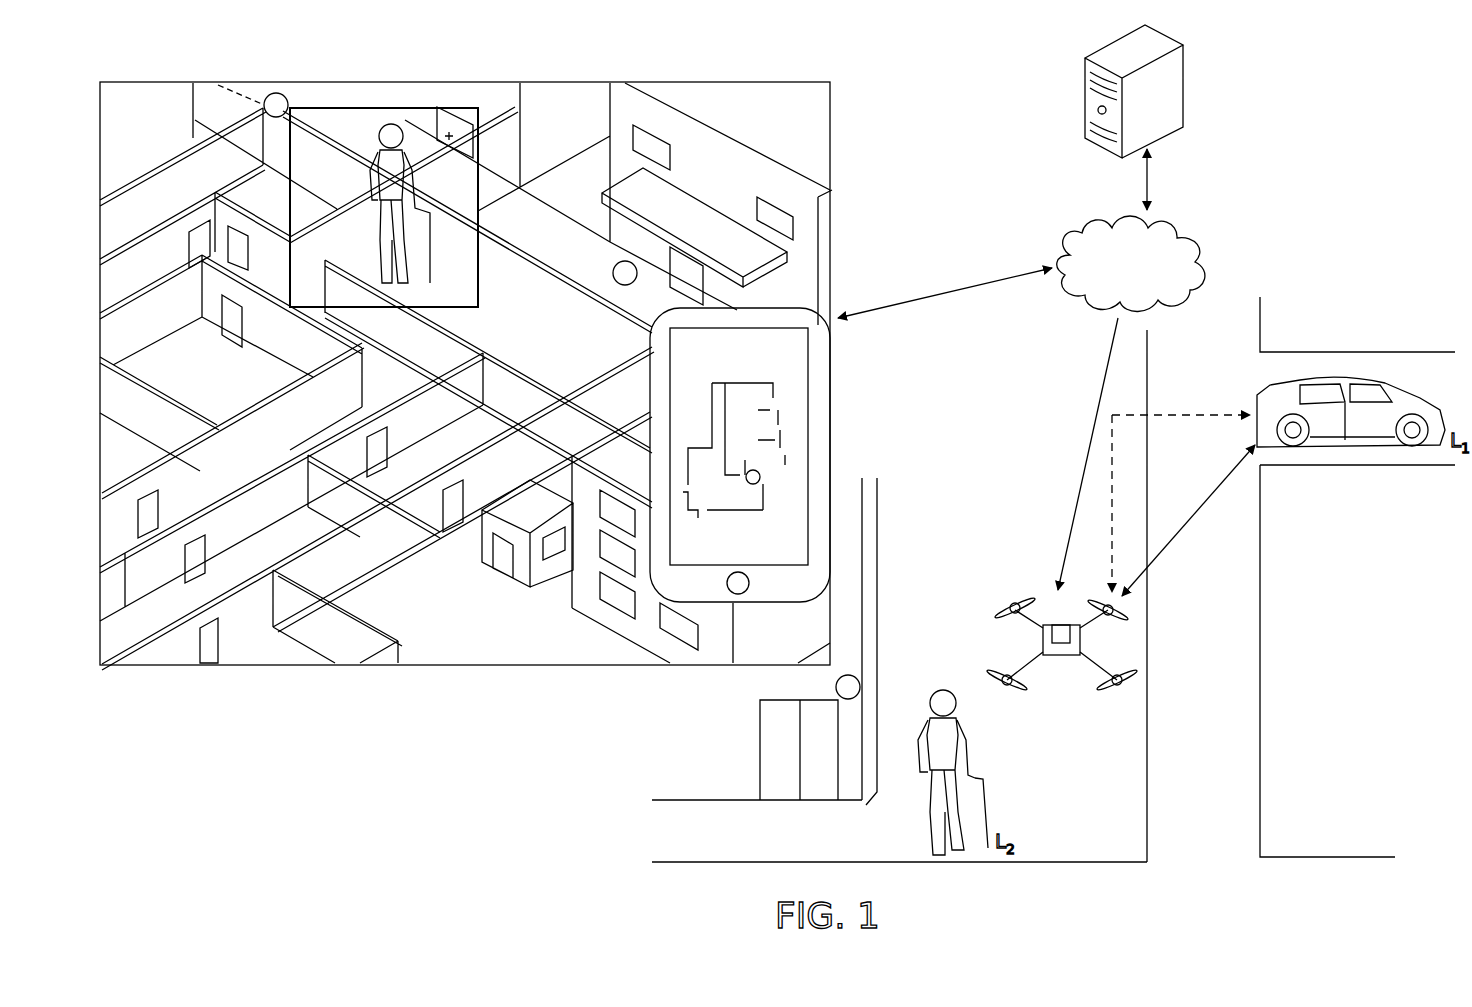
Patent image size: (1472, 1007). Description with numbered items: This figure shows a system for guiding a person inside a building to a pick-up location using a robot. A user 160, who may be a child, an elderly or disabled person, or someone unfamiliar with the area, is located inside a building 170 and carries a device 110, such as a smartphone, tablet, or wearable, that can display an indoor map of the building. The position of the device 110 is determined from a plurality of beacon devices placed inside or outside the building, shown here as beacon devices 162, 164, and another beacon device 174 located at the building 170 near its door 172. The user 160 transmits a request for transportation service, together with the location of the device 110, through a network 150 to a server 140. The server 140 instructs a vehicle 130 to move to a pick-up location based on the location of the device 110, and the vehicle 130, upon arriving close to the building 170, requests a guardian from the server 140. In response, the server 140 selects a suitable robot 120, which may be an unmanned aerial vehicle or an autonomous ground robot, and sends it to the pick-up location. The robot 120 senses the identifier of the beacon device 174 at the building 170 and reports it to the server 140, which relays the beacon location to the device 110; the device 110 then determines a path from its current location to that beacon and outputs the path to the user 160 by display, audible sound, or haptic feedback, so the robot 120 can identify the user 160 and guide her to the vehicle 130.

The device 110 is at (832, 418).
The robot 120 is at (1013, 605).
The vehicle 130 is at (1385, 392).
The server 140 is at (1183, 82).
The network 150 is at (1205, 246).
The user 160 is at (383, 122).
The beacon device 162 is at (634, 262).
The beacon device 164 is at (272, 93).
The building 170 is at (877, 598).
The door 172 is at (770, 700).
The beacon device 174 is at (860, 687).